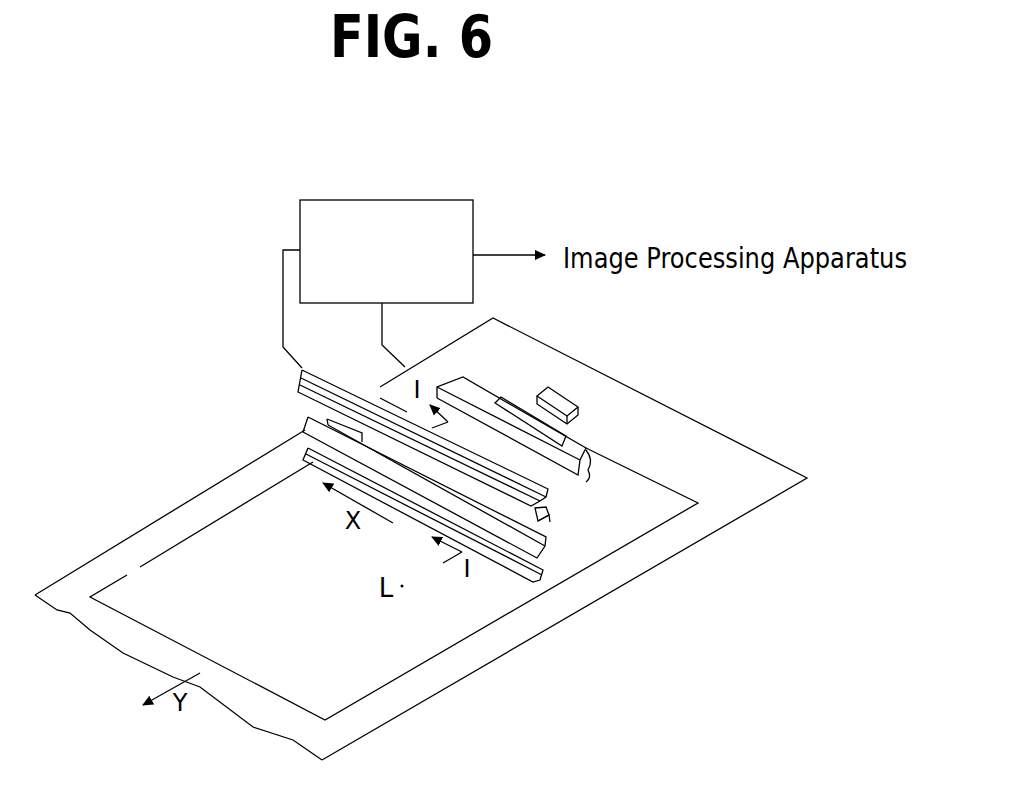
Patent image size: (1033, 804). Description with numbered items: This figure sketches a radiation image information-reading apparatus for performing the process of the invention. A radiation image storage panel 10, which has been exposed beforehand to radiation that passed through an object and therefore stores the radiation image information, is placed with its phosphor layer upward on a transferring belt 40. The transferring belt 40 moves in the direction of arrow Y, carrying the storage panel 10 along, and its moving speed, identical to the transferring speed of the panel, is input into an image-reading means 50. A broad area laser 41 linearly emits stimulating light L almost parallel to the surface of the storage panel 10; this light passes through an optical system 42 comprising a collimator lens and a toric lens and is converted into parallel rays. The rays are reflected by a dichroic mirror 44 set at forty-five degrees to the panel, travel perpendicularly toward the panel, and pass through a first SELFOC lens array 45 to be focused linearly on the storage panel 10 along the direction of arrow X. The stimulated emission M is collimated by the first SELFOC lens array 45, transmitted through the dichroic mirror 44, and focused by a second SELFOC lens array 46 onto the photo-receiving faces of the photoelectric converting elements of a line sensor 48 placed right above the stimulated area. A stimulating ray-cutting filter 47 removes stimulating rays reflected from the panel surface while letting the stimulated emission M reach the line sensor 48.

The radiation image storage panel 10 is at (375, 672).
The transferring belt 40 is at (613, 392).
The broad area laser 41 is at (558, 396).
The optical system 42 is at (613, 455).
The dichroic mirror 44 is at (302, 422).
The first SELFOC lens array 45 is at (304, 446).
The second SELFOC lens array 46 is at (548, 518).
The stimulating ray-cutting filter 47 is at (547, 500).
The line sensor 48 is at (350, 367).
The image-reading means 50 is at (392, 200).